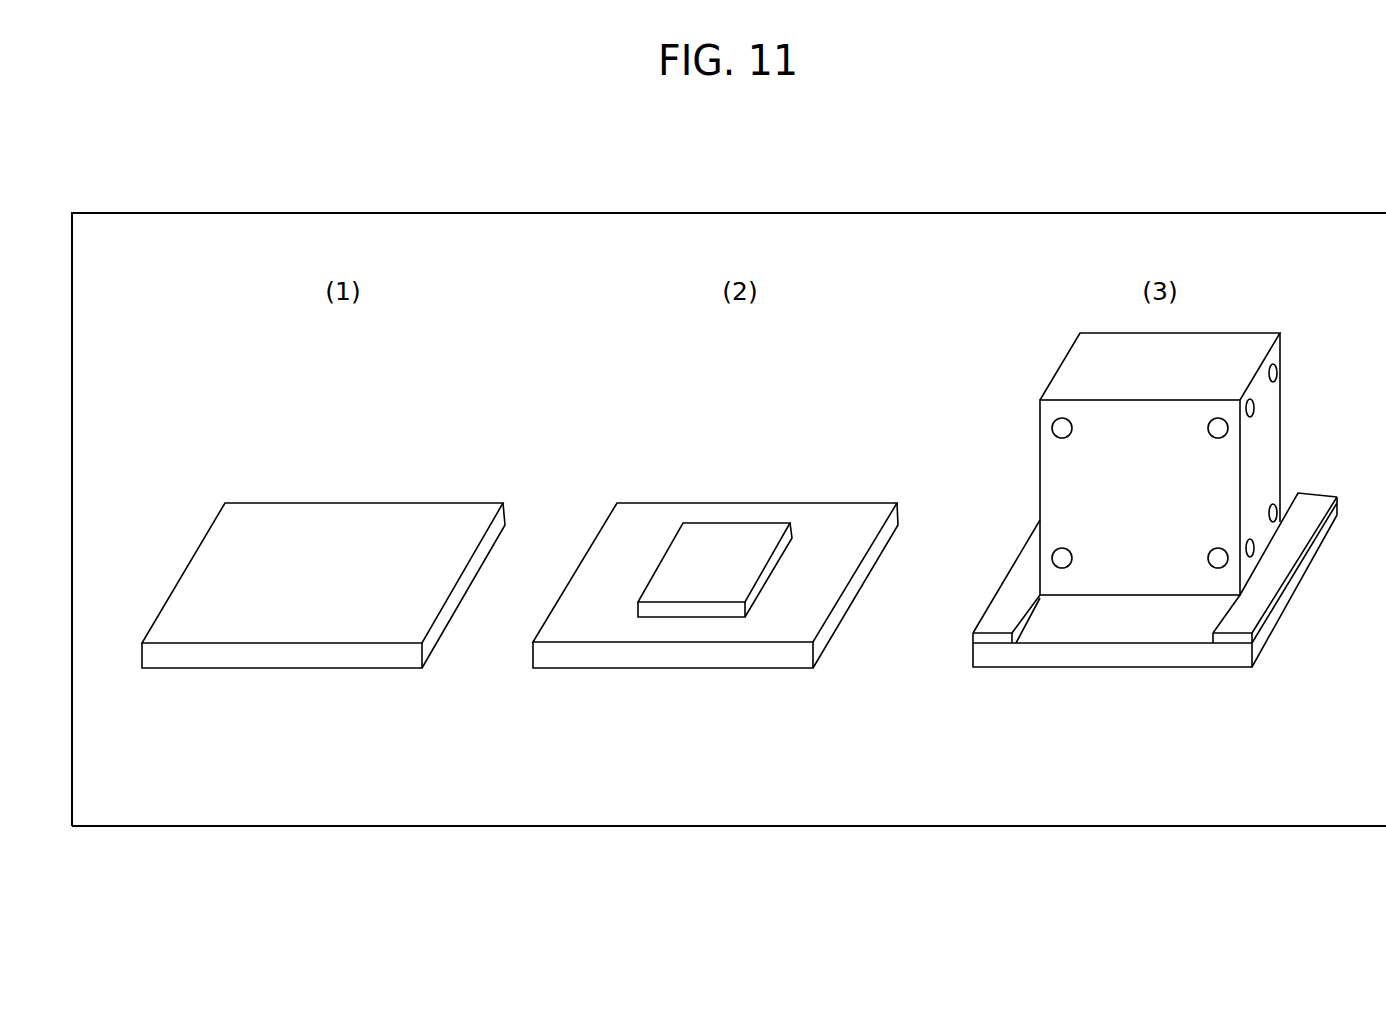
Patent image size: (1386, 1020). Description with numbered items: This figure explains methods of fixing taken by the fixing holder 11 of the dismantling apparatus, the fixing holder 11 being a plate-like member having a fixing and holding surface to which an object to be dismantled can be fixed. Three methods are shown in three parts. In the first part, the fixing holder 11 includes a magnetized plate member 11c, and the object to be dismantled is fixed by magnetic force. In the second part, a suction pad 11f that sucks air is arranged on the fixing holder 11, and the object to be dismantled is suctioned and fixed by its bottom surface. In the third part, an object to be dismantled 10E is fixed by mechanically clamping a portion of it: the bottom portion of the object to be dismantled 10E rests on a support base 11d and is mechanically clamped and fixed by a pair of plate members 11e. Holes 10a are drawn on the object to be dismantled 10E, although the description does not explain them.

The object to be dismantled 10E is at (1038, 437).
The mounting hole 10a is at (1228, 430).
The fixing holder 11 is at (345, 688).
The magnetized plate member 11c is at (189, 668).
The support base 11d is at (1142, 658).
The plate members 11e is at (997, 641).
The suction pad 11f is at (688, 587).